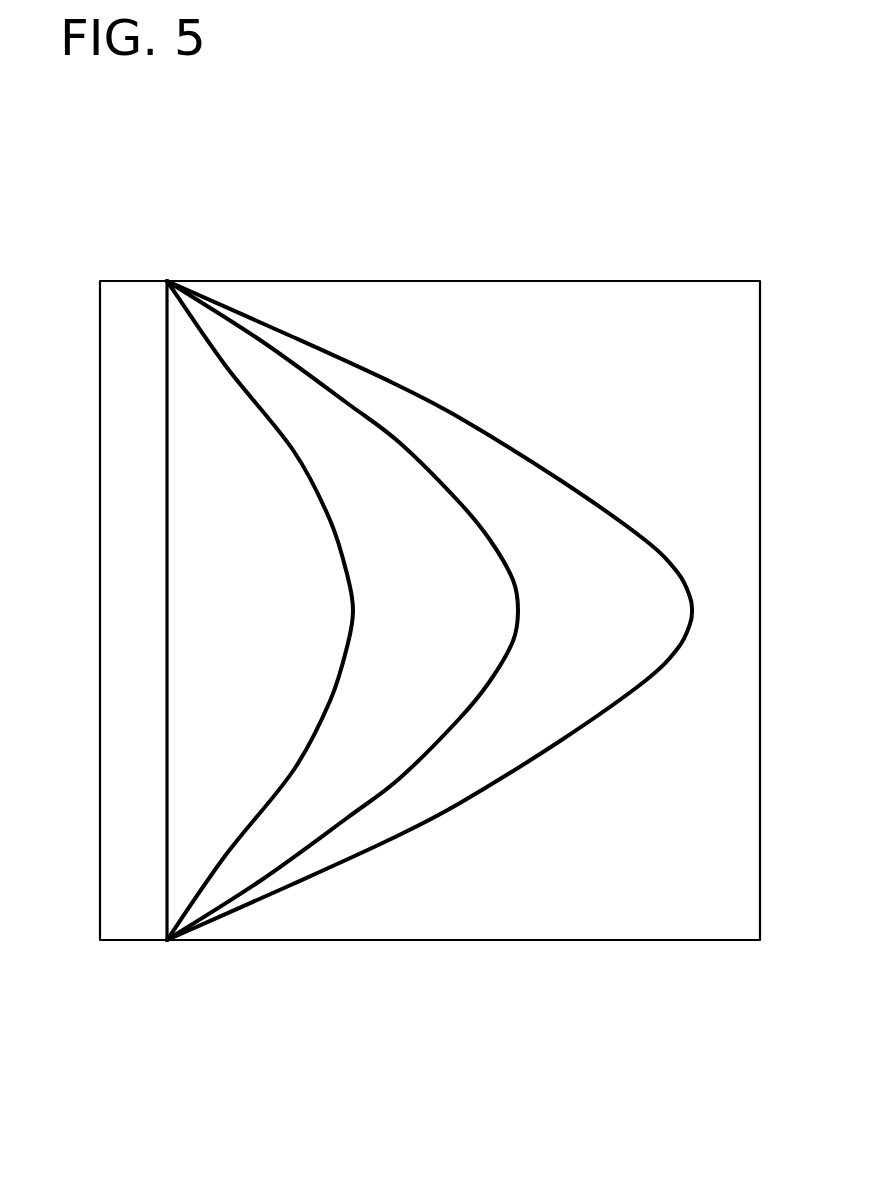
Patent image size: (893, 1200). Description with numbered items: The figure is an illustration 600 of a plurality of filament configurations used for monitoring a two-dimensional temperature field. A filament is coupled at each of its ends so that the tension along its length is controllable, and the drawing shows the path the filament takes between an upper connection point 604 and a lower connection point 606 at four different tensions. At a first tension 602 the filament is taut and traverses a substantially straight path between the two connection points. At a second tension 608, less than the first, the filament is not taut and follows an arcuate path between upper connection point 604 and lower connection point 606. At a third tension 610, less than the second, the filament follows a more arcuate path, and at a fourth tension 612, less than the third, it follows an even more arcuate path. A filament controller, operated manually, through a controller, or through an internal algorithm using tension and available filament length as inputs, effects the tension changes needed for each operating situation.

The illustration 600 is at (680, 220).
The first tension 602 is at (165, 628).
The upper connection point 604 is at (167, 280).
The lower connection point 606 is at (167, 941).
The second tension 608 is at (347, 650).
The third tension 610 is at (503, 652).
The fourth tension 612 is at (633, 688).